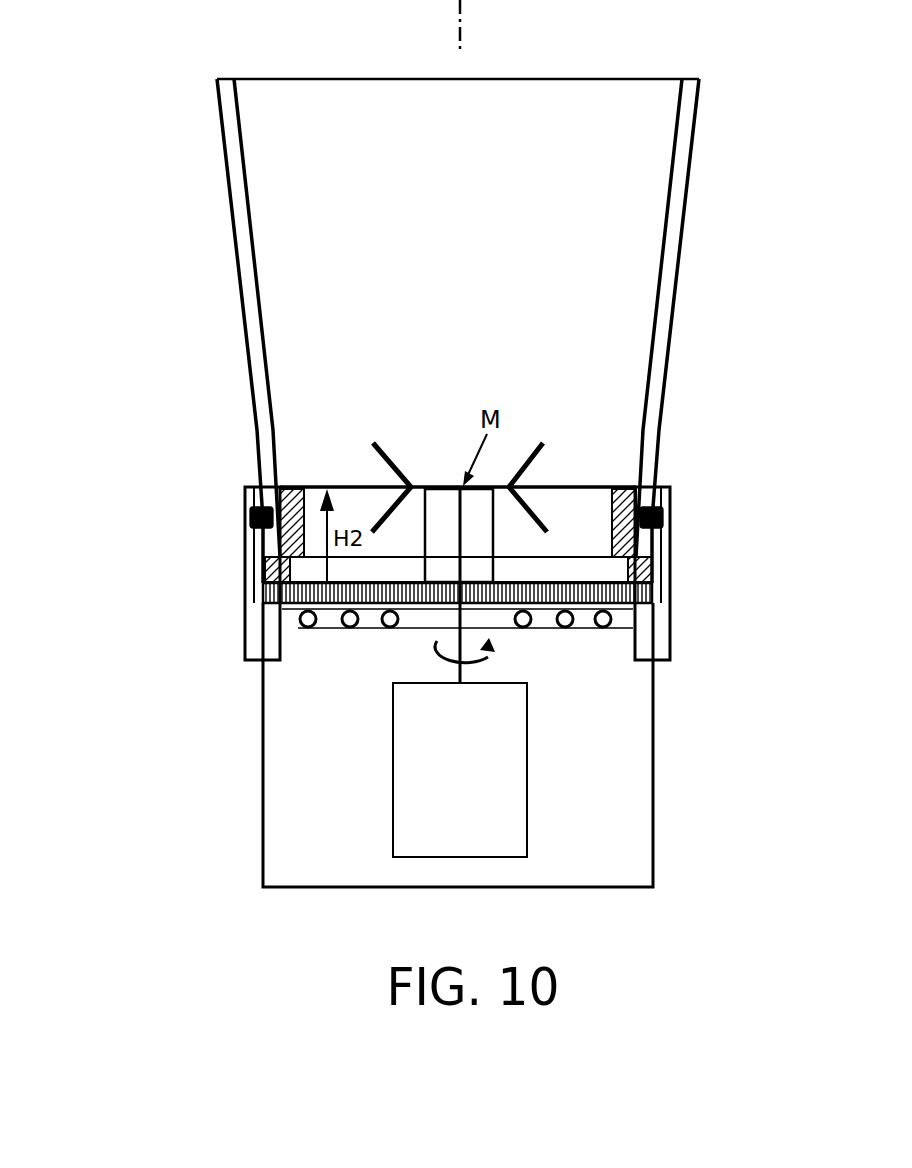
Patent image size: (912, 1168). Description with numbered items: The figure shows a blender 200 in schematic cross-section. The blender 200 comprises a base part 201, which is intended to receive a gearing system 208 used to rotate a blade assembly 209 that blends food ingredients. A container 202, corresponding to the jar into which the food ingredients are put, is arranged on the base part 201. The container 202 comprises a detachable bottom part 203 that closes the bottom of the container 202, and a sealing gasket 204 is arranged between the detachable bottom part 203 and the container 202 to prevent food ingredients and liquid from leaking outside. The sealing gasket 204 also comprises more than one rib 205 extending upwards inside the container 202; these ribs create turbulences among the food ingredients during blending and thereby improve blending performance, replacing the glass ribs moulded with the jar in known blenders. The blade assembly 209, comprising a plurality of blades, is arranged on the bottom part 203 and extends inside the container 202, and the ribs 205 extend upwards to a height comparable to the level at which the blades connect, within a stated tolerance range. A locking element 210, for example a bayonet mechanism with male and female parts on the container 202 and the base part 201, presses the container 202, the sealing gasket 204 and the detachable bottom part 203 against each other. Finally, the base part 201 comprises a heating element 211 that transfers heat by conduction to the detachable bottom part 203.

The blender 200 is at (128, 74).
The base part 201 is at (655, 744).
The container 202 is at (675, 310).
The detachable bottom part 203 is at (672, 593).
The sealing gasket 204 is at (267, 568).
The rib 205 is at (616, 487).
The gearing system 208 is at (527, 815).
The blade assembly 209 is at (438, 486).
The locking element 210 is at (245, 641).
The heating element 211 is at (320, 630).